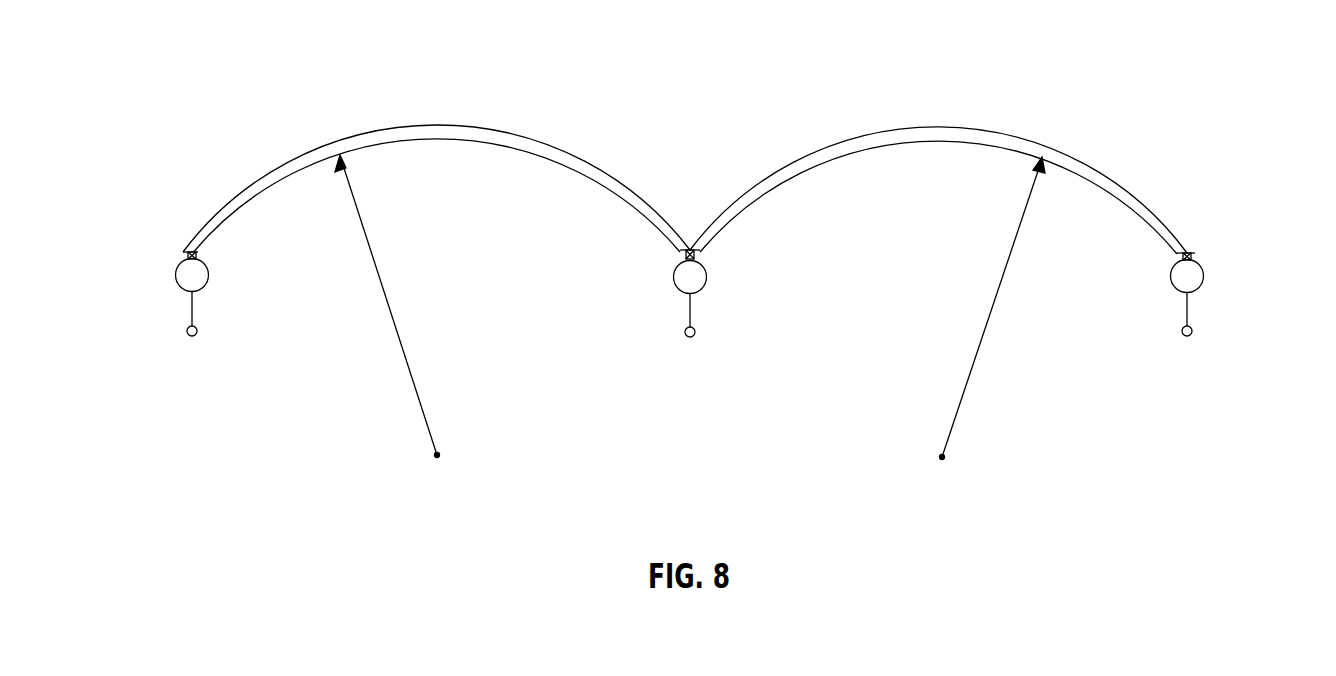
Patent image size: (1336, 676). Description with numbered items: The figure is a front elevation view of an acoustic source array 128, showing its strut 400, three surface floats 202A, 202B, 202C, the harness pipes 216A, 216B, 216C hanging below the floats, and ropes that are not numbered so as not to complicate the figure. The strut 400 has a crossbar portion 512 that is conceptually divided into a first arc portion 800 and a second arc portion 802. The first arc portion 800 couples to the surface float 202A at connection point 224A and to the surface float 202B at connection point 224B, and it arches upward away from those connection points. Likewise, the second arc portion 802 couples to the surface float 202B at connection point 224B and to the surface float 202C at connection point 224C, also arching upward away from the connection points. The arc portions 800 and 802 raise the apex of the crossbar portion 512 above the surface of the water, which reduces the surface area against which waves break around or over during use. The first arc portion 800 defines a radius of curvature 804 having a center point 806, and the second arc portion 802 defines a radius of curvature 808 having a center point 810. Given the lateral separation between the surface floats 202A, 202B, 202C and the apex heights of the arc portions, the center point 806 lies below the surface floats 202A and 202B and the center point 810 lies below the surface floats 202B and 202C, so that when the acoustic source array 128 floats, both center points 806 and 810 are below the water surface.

The acoustic source array 128 is at (211, 81).
The strut 400 is at (185, 196).
The crossbar portion 512 is at (270, 156).
The first arc portion 800 is at (443, 125).
The second arc portion 802 is at (938, 127).
The radius of curvature 804 is at (388, 305).
The center point 806 is at (440, 457).
The radius of curvature 808 is at (990, 307).
The center point 810 is at (945, 459).
The connection point 224A is at (203, 257).
The surface float 202A is at (206, 288).
The harness pipe 216A is at (198, 336).
The connection point 224B is at (700, 257).
The surface float 202B is at (704, 290).
The harness pipe 216B is at (696, 337).
The connection point 224C is at (1196, 257).
The surface float 202C is at (1201, 289).
The harness pipe 216C is at (1193, 336).